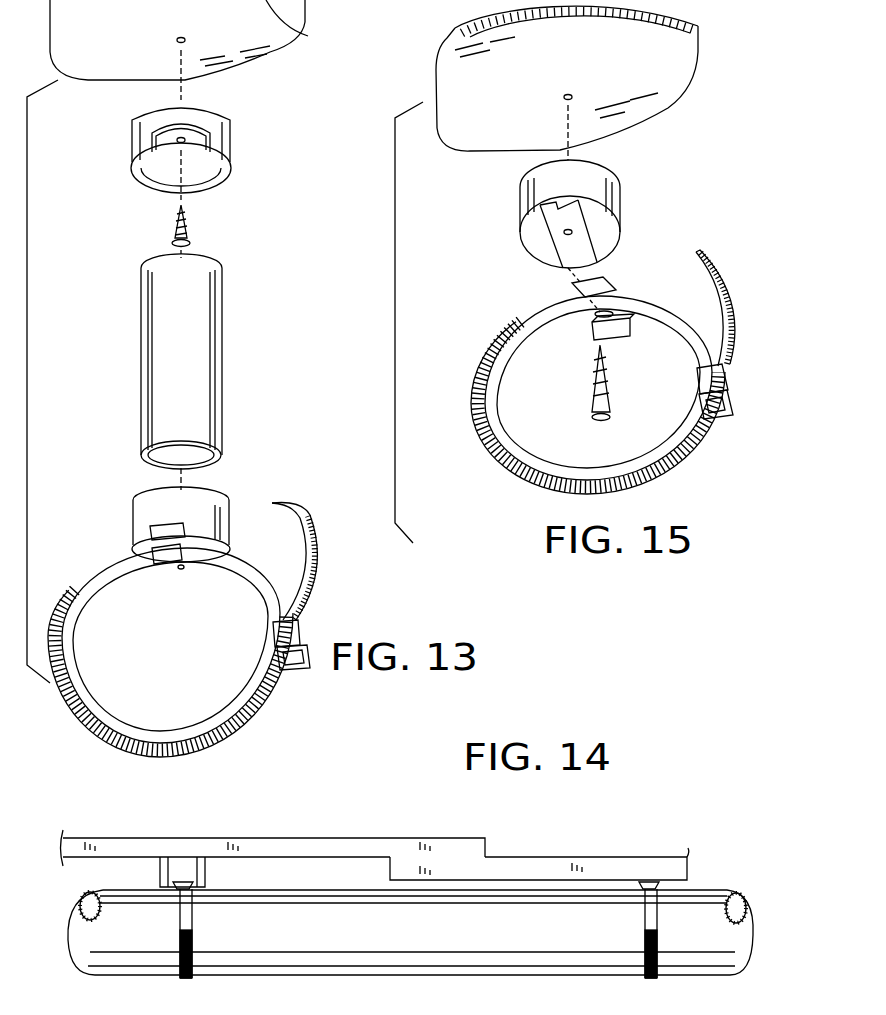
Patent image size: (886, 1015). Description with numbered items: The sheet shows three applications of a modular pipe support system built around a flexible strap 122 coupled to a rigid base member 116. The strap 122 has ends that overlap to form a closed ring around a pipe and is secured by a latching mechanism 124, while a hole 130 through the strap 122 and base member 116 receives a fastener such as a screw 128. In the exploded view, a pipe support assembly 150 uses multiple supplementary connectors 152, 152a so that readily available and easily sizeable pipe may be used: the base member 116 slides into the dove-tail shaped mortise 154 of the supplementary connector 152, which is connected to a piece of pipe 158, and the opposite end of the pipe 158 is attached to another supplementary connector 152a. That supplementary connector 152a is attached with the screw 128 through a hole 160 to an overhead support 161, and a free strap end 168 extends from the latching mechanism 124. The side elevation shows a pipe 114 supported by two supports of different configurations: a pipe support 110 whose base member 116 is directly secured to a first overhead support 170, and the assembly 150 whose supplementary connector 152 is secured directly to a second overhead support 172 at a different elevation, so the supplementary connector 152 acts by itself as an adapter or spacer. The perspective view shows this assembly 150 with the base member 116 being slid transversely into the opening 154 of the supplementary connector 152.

In FIG. 14, the pipe support 110 is at (643, 943).
In FIG. 14, the pipe 114 is at (400, 949).
In FIG. 13, the base member 116 is at (165, 552).
In FIG. 15, the base member 116 is at (620, 276).
In FIG. 14, the base member 116 is at (180, 877).
In FIG. 13, the flexible strap 122 is at (62, 640).
In FIG. 15, the flexible strap 122 is at (487, 395).
In FIG. 14, the flexible strap 122 is at (192, 924).
In FIG. 13, the latching mechanism 124 is at (303, 674).
In FIG. 15, the latching mechanism 124 is at (734, 420).
In FIG. 13, the screw 128 is at (190, 222).
In FIG. 15, the screw 128 is at (594, 383).
In FIG. 15, the hole 130 is at (613, 332).
In FIG. 13, the pipe support assembly 150 is at (97, 736).
In FIG. 15, the pipe support assembly 150 is at (500, 473).
In FIG. 14, the pipe support assembly 150 is at (177, 939).
In FIG. 13, the supplementary connector 152 is at (133, 508).
In FIG. 15, the supplementary connector 152 is at (518, 213).
In FIG. 14, the supplementary connector 152 is at (208, 868).
In FIG. 13, the supplementary connector 152a is at (138, 186).
In FIG. 13, the opening (dove-tail shaped mortise) 154 is at (165, 527).
In FIG. 15, the opening (dove-tail shaped mortise) 154 is at (567, 205).
In FIG. 13, the piece of pipe 158 is at (207, 352).
In FIG. 13, the hole 160 is at (208, 165).
In FIG. 13, the overhead support 161 is at (309, 36).
In FIG. 13, the strap free end 168 is at (293, 522).
In FIG. 15, the strap free end 168 is at (730, 298).
In FIG. 14, the first overhead support 170 is at (513, 865).
In FIG. 15, the second overhead support 172 is at (466, 124).
In FIG. 14, the second overhead support 172 is at (333, 845).